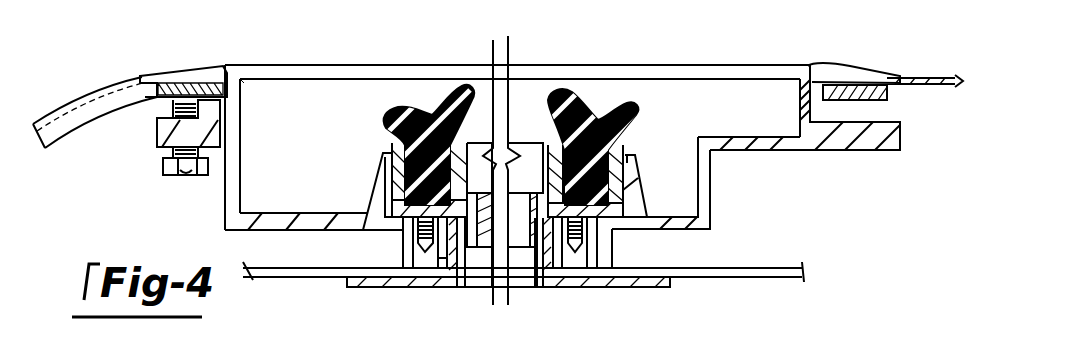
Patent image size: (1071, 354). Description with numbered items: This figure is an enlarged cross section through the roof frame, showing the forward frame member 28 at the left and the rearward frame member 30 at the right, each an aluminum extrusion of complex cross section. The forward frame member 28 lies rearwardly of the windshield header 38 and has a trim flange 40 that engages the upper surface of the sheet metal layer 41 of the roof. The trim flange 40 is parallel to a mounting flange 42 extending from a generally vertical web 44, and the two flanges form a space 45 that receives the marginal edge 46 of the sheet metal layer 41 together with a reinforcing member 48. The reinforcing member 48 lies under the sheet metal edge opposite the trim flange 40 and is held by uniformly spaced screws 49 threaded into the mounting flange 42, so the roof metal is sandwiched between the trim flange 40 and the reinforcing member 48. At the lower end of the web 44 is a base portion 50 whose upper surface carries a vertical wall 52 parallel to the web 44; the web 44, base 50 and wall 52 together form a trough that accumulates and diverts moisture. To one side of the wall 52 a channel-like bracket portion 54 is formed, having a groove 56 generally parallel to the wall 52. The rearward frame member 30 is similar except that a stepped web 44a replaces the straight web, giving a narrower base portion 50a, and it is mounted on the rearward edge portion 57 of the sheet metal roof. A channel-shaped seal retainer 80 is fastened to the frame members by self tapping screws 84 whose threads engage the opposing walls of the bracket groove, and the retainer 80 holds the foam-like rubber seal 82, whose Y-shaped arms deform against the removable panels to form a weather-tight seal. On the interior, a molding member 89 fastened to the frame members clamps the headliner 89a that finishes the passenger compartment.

The forward frame member 28 is at (244, 90).
The rearward frame member 30 is at (800, 154).
The windshield header 38 is at (85, 90).
The trim flange 40 is at (198, 70).
The sheet metal layer 41 is at (256, 98).
The mounting flange 42 is at (163, 135).
The web 44 is at (236, 166).
The stepped web 44a is at (727, 148).
The space 45 is at (223, 148).
The marginal edge 46 is at (228, 84).
The reinforcing member 48 is at (153, 100).
The screws 49 is at (183, 176).
The base portion 50 is at (270, 212).
The base portion 50a is at (660, 222).
The vertical wall 52 is at (374, 192).
The bracket portion 54 is at (443, 240).
The groove 56 is at (418, 239).
The rearward edge portion 57 is at (806, 80).
The seal retainer 80 is at (470, 147).
The seal 82 is at (417, 118).
The self tapping screws 84 is at (440, 268).
The molding member 89 is at (378, 282).
The headliner 89a is at (276, 280).